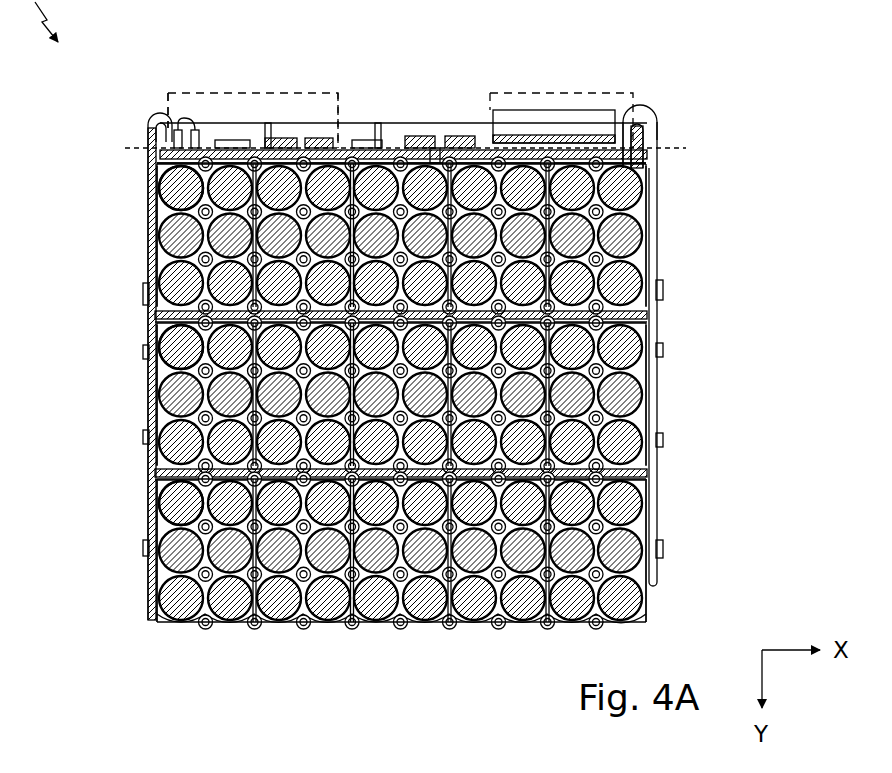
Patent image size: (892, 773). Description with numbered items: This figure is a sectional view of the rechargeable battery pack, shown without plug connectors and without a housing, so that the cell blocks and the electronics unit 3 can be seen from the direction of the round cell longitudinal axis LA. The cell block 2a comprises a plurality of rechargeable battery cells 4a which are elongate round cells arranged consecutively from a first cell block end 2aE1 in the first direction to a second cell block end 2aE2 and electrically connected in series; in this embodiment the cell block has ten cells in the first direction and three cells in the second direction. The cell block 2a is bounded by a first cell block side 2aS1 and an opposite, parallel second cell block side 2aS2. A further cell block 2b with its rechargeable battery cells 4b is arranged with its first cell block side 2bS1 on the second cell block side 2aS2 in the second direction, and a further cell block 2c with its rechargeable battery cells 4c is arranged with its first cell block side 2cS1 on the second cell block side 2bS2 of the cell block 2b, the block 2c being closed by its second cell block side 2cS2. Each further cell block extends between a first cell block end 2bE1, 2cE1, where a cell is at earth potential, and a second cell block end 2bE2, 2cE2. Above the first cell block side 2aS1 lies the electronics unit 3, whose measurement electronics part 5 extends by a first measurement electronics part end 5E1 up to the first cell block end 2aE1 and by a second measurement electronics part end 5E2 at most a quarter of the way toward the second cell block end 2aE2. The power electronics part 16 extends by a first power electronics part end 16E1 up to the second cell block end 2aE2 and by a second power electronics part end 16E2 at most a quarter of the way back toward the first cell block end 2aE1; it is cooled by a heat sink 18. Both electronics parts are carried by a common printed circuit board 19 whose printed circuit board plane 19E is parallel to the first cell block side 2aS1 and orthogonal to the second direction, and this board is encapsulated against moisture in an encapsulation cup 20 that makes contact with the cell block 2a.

The cell block 2a is at (160, 258).
The further cell block 2b is at (160, 421).
The further cell block 2c is at (160, 578).
The first cell block end 2aE1 is at (157, 221).
The second cell block end 2aE2 is at (648, 240).
The first cell block side 2aS1 is at (648, 161).
The second cell block side 2aS2 is at (650, 314).
The first cell block end 2bE1 is at (157, 381).
The second cell block end 2bE2 is at (648, 395).
The first cell block side 2bS1 is at (650, 321).
The second cell block side 2bS2 is at (650, 472).
The first cell block end 2cE1 is at (157, 538).
The second cell block end 2cE2 is at (648, 552).
The first cell block side 2cS1 is at (650, 479).
The second cell block side 2cS2 is at (618, 629).
The electronics unit 3 is at (385, 153).
The rechargeable battery cell 4a is at (180, 188).
The rechargeable battery cell 4b is at (180, 347).
The rechargeable battery cell 4c is at (180, 502).
The measurement electronics part 5 is at (237, 93).
The first measurement electronics part end 5E1 is at (167, 107).
The second measurement electronics part end 5E2 is at (350, 95).
The power electronics part 16 is at (645, 104).
The first power electronics part end 16E1 is at (645, 116).
The second power electronics part end 16E2 is at (472, 103).
The heat sink 18 is at (589, 110).
The common printed circuit board 19 is at (434, 160).
The printed circuit board plane 19E is at (138, 148).
The encapsulation cup 20 is at (148, 126).
The round cell longitudinal axis LA is at (622, 190).